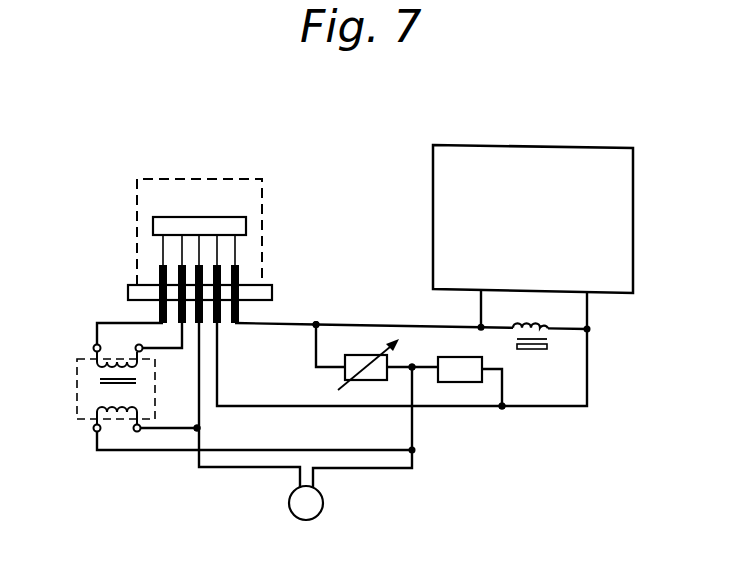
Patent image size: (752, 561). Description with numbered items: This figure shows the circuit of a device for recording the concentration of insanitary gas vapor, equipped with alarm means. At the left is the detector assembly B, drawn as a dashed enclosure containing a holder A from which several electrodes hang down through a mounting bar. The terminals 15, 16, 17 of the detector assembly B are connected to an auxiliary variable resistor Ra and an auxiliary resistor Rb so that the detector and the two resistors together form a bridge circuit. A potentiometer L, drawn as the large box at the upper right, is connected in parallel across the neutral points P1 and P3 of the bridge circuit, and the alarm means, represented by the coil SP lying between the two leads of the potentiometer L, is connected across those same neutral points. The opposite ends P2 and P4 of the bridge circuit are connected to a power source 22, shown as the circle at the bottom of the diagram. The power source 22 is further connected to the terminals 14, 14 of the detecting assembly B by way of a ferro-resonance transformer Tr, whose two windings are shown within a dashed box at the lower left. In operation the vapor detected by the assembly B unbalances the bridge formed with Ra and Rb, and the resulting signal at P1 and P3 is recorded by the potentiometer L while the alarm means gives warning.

The terminals 14 is at (180, 264).
The terminal 15 is at (238, 270).
The terminal 16 is at (199, 323).
The terminal 17 is at (217, 323).
The power source 22 is at (288, 502).
The electrode holder A is at (213, 217).
The detector assembly B is at (121, 189).
The potentiometer L is at (634, 190).
The ferro-resonance transformer Tr is at (100, 388).
The neutral point P1 is at (502, 408).
The opposite end of bridge circuit P2 is at (201, 428).
The neutral point P3 is at (316, 324).
The opposite end of bridge circuit P4 is at (412, 366).
The auxiliary variable resistor Ra is at (352, 355).
The auxiliary resistor Rb is at (462, 382).
The coil SP is at (530, 350).